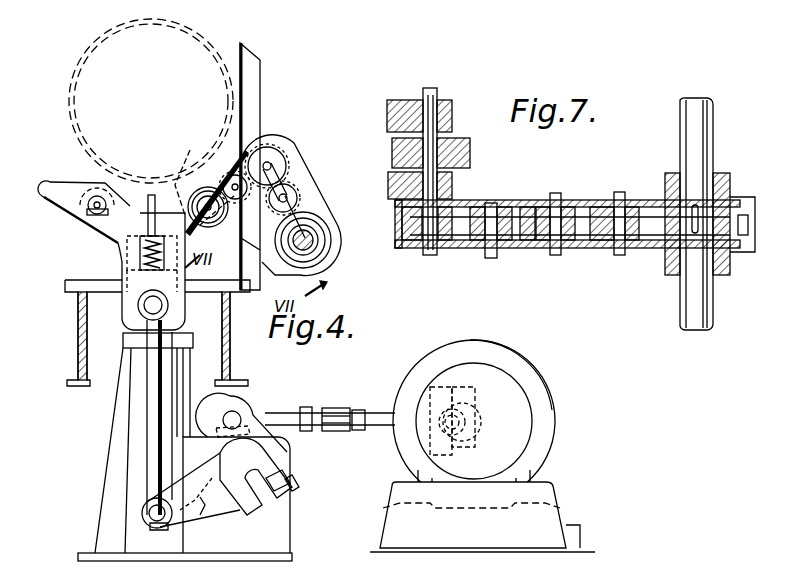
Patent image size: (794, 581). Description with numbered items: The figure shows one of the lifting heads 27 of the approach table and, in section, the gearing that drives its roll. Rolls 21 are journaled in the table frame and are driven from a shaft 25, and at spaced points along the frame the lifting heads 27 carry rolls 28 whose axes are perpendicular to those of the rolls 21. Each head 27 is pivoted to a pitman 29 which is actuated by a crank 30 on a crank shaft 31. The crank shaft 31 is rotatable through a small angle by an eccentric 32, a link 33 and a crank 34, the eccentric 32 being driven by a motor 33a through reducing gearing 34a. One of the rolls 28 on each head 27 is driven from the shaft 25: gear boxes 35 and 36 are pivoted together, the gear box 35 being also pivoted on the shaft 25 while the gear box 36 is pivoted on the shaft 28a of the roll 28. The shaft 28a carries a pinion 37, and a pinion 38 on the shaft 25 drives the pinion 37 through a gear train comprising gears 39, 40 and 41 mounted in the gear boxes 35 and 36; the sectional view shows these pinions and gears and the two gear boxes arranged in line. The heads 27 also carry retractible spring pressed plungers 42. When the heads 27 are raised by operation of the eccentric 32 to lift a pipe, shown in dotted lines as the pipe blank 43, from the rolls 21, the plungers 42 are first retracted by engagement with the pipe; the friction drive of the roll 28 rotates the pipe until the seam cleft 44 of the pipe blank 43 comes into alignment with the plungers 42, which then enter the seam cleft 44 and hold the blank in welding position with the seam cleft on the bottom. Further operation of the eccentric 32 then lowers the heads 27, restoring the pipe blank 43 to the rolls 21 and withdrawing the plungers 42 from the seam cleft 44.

In FIG. 4, the rolls 21 is at (695, 570).
In FIG. 4, the shaft 25 is at (322, 247).
In FIG. 7, the shaft 25 is at (686, 150).
In FIG. 4, the lifting heads 27 is at (118, 246).
In FIG. 7, the lifting heads 27 is at (449, 110).
In FIG. 4, the rolls 28 is at (85, 228).
In FIG. 7, the rolls 28 is at (471, 160).
In FIG. 4, the shaft 28a is at (195, 175).
In FIG. 7, the shaft 28a is at (433, 88).
In FIG. 4, the pitmen 29 is at (150, 388).
In FIG. 4, the cranks 30 is at (205, 512).
In FIG. 4, the crank shaft 31 is at (275, 472).
In FIG. 4, the eccentric 32 is at (490, 412).
In FIG. 4, the link 33 is at (320, 410).
In FIG. 4, the motor 33a is at (515, 430).
In FIG. 4, the crank 34 is at (240, 410).
In FIG. 4, the reducing gearing 34a is at (536, 376).
In FIG. 4, the gear box 35 is at (302, 202).
In FIG. 7, the gear box 35 is at (596, 200).
In FIG. 4, the gear box 36 is at (256, 142).
In FIG. 7, the gear box 36 is at (484, 252).
In FIG. 4, the pinion 37 is at (195, 192).
In FIG. 7, the pinion 37 is at (440, 252).
In FIG. 4, the pinion 38 is at (315, 225).
In FIG. 7, the pinion 38 is at (668, 250).
In FIG. 4, the gear 39 is at (293, 186).
In FIG. 7, the gear 39 is at (610, 254).
In FIG. 4, the gear 40 is at (280, 160).
In FIG. 7, the gear 40 is at (556, 256).
In FIG. 4, the gear 41 is at (228, 175).
In FIG. 7, the gear 41 is at (528, 250).
In FIG. 4, the spring pressed plungers 42 is at (105, 180).
In FIG. 4, the pipe blank 43 is at (70, 100).
In FIG. 4, the seam cleft 44 is at (212, 56).